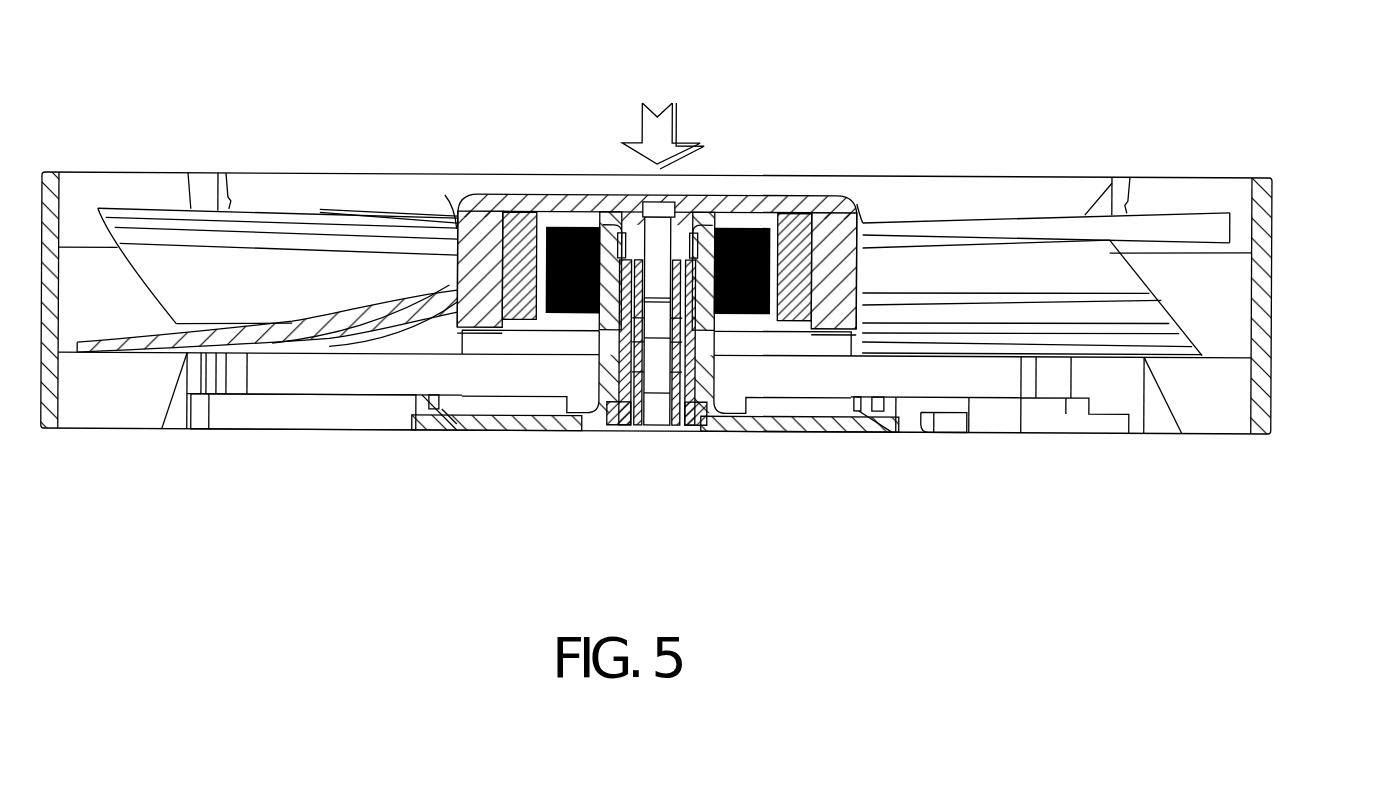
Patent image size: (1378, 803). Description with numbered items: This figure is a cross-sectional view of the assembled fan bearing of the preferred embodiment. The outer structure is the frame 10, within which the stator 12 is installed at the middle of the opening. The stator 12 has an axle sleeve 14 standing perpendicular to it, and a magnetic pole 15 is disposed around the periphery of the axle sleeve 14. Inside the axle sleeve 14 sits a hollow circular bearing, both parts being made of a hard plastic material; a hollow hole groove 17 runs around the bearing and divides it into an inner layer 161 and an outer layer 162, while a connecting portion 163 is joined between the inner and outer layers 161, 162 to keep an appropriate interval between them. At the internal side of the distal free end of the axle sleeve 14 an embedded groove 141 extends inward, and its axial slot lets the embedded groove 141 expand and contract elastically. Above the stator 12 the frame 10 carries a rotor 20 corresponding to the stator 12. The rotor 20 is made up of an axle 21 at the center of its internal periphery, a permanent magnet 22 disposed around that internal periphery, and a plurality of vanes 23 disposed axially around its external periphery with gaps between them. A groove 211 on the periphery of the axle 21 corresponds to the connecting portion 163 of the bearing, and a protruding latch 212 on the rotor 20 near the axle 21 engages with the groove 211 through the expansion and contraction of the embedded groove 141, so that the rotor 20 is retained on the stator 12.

The frame 10 is at (1263, 357).
The stator 12 is at (585, 450).
The axle sleeve 14 is at (600, 352).
The embedded groove 141 is at (695, 241).
The magnetic pole 15 is at (557, 224).
The inner layer 161 is at (640, 259).
The outer layer 162 is at (618, 247).
The connecting portion 163 is at (700, 315).
The hollow hole groove 17 is at (683, 337).
The rotor 20 is at (792, 154).
The axle 21 is at (660, 360).
The groove 211 is at (683, 259).
The protruding latch 212 is at (688, 222).
The permanent magnet 22 is at (607, 345).
The vanes 23 is at (1007, 306).